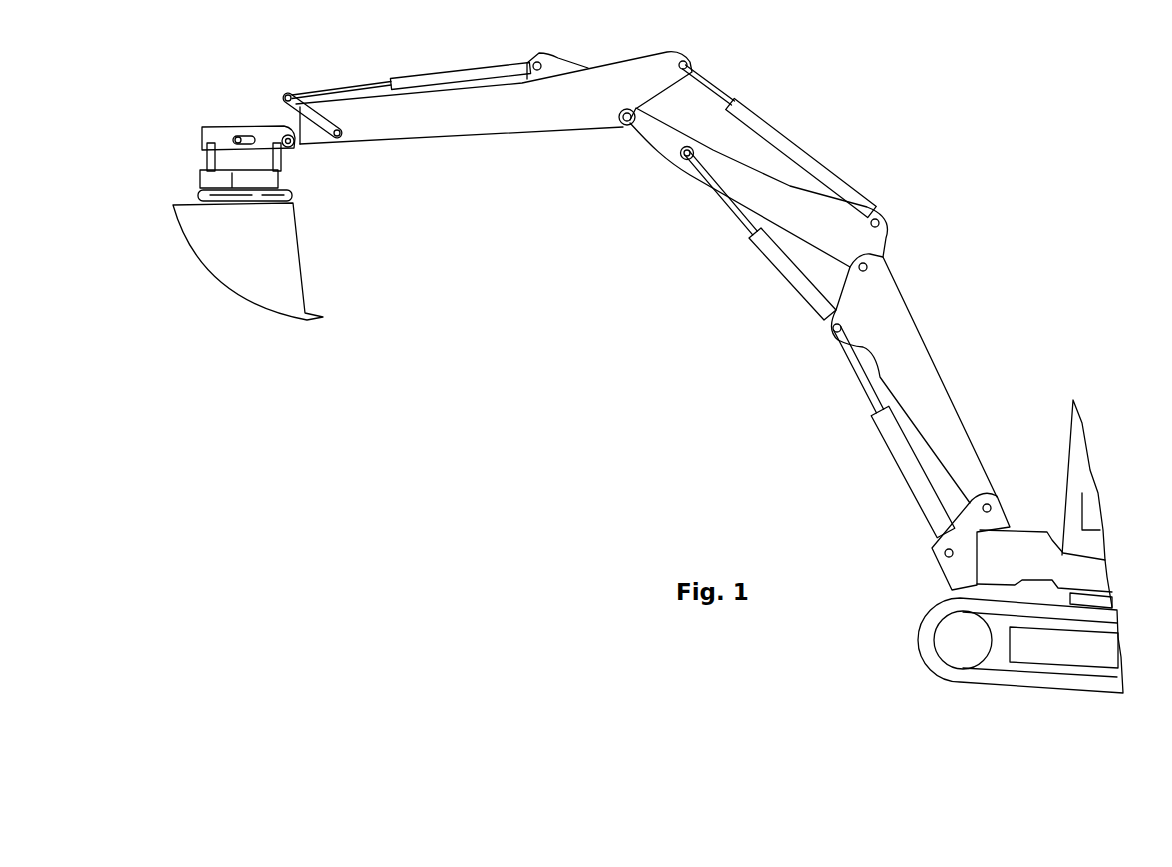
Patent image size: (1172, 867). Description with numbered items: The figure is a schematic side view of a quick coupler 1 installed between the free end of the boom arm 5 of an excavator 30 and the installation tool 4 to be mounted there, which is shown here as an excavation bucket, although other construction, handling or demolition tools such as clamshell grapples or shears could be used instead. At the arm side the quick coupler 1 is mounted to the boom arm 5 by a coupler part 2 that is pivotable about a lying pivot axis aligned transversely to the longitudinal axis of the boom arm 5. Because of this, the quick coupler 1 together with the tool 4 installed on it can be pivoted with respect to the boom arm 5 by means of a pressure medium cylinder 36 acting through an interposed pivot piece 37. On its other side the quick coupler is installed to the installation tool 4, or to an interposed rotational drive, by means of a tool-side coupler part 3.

The quick coupler 1 is at (202, 145).
The coupler part at the arm side 2 is at (210, 132).
The tool-side coupler part 3 is at (200, 156).
The installation tool 4 is at (270, 307).
The boom arm 5 is at (513, 117).
The excavator 30 is at (1077, 388).
The pressure medium cylinder 36 is at (420, 78).
The pivot piece 37 is at (299, 96).